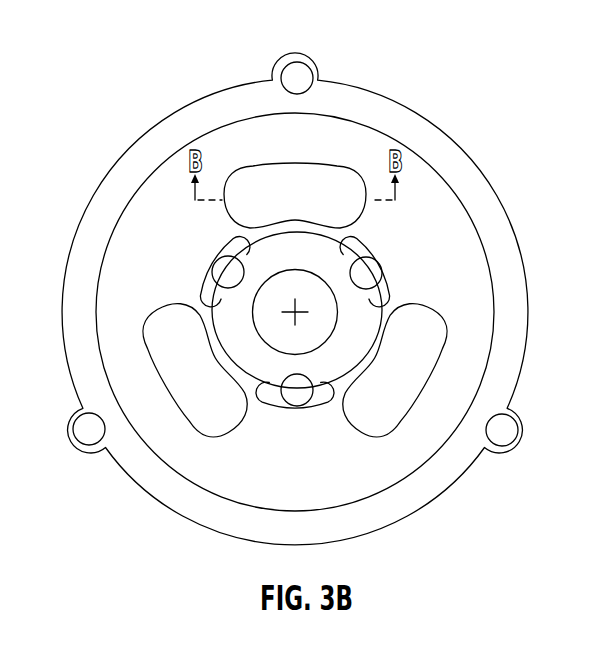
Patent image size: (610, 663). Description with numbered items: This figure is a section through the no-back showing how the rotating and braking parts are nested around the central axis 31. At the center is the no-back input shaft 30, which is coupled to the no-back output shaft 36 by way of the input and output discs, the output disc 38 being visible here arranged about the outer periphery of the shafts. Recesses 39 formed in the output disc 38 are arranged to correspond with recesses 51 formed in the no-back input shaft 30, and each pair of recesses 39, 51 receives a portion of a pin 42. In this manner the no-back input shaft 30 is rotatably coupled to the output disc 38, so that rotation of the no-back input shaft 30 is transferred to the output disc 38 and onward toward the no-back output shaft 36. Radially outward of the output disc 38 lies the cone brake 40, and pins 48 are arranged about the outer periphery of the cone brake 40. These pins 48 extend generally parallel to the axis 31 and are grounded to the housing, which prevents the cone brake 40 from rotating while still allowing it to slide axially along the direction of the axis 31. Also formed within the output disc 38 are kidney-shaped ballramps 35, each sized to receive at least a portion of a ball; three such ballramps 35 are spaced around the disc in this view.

The no-back input shaft 30 is at (357, 318).
The axis 31 is at (290, 308).
The kidney-shaped ballramps 35 is at (276, 186).
The no-back output shaft 36 is at (297, 342).
The output disc 38 is at (425, 198).
The recesses 39 is at (392, 287).
The cone brake 40 is at (383, 108).
The pin 42 is at (367, 273).
The pins 48 is at (502, 430).
The recesses 51 is at (298, 406).